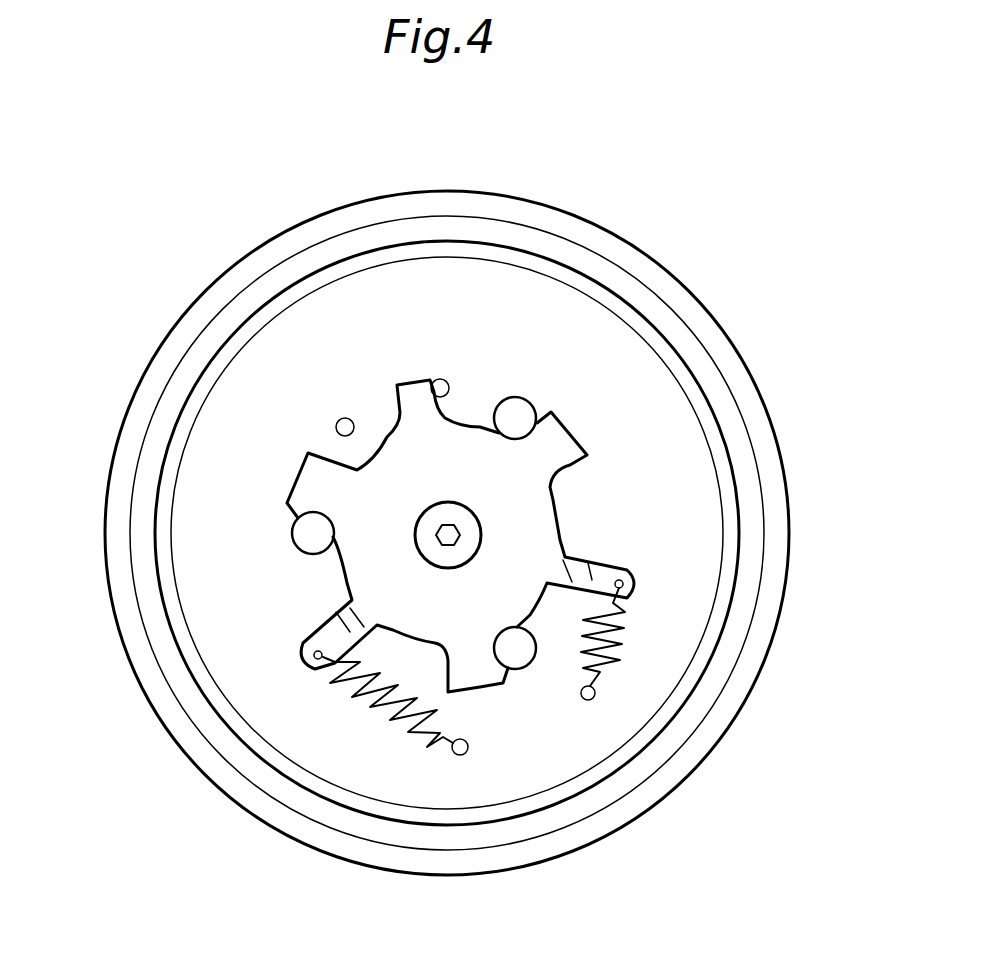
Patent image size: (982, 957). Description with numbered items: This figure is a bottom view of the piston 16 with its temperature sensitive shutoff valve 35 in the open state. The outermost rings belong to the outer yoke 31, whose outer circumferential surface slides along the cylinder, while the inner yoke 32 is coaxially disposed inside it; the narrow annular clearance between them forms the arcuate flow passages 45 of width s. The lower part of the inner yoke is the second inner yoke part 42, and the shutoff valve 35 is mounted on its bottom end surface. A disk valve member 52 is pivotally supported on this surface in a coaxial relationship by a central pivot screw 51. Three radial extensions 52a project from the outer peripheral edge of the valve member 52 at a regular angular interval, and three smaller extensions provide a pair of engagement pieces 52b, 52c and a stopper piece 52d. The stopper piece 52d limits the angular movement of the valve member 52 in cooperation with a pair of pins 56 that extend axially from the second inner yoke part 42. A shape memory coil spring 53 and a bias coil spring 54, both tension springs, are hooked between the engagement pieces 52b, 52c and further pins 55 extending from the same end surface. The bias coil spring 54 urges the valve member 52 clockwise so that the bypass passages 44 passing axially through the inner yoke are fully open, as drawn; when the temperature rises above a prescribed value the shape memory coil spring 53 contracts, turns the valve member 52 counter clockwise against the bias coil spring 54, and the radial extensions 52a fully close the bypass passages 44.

The piston 16 is at (215, 181).
The outer yoke 31 is at (143, 672).
The inner yoke 32 is at (397, 538).
The second inner yoke part 42 is at (252, 703).
The temperature sensitive shutoff valve 35 is at (598, 348).
The bypass passages 44 is at (518, 400).
The arcuate flow passages 45 is at (218, 335).
The pivot screw 51 is at (470, 516).
The disk valve member 52 is at (555, 532).
The radial extensions 52a is at (563, 433).
The engagement piece 52b is at (315, 668).
The engagement piece 52c is at (633, 577).
The stopper piece 52d is at (411, 388).
The shape memory coil spring 53 is at (417, 730).
The bias coil spring 54 is at (620, 637).
The pins 55 is at (595, 695).
The pins 56 is at (442, 380).